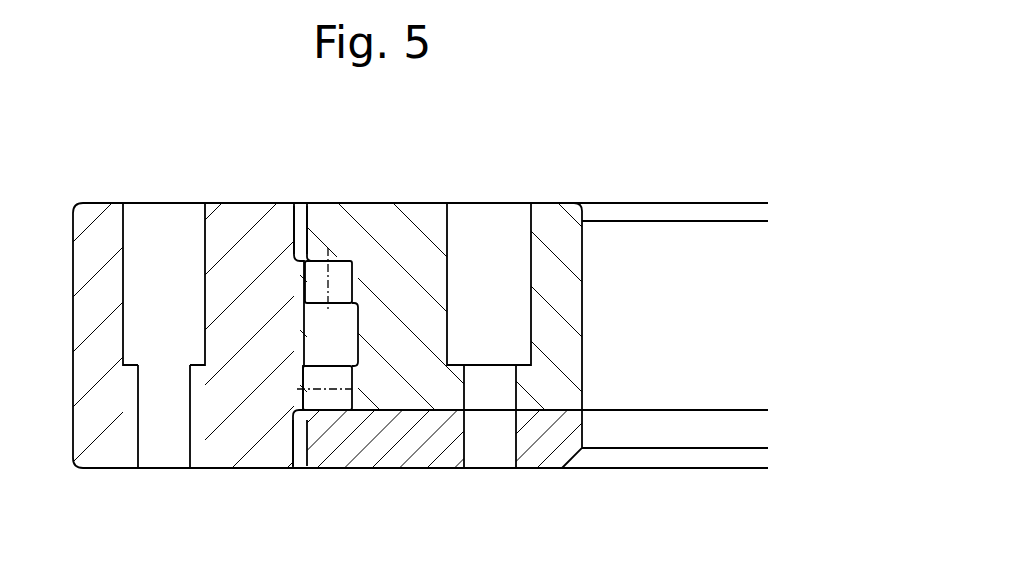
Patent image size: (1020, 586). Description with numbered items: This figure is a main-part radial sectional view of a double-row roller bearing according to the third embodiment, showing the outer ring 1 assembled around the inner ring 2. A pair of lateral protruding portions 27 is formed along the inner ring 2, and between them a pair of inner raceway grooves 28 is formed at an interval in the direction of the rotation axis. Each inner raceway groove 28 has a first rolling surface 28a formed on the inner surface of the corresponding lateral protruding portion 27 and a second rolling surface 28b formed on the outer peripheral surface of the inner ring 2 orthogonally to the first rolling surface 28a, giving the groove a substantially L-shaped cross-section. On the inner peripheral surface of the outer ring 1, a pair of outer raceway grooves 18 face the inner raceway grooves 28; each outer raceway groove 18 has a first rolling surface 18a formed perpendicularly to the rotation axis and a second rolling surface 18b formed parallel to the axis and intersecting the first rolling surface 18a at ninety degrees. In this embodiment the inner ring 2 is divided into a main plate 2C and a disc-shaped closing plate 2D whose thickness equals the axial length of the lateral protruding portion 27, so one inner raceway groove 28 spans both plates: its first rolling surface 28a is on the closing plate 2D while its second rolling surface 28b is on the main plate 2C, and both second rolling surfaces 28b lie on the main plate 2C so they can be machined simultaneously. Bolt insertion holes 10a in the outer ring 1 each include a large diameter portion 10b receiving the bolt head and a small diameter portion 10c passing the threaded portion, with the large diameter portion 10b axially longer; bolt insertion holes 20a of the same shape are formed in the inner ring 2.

The outer ring 1 is at (100, 195).
The inner ring 2 is at (443, 339).
The main plate 2C is at (561, 216).
The closing plate 2D is at (541, 458).
The bolt insertion hole 10a is at (131, 384).
The large diameter portion 10b is at (134, 345).
The small diameter portion 10c is at (151, 425).
The outer raceway groove 18 is at (267, 222).
The first rolling surface 18a is at (310, 296).
The second rolling surface 18b is at (312, 262).
The bolt insertion hole 20a is at (450, 247).
The lateral protruding portion 27 is at (322, 215).
The inner raceway groove 28 is at (363, 359).
The first rolling surface 28a is at (335, 404).
The second rolling surface 28b is at (348, 282).